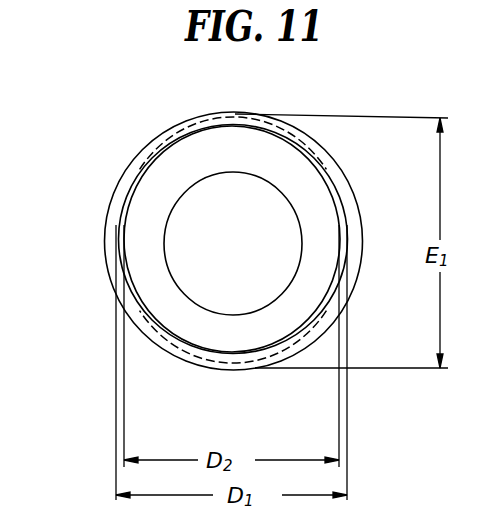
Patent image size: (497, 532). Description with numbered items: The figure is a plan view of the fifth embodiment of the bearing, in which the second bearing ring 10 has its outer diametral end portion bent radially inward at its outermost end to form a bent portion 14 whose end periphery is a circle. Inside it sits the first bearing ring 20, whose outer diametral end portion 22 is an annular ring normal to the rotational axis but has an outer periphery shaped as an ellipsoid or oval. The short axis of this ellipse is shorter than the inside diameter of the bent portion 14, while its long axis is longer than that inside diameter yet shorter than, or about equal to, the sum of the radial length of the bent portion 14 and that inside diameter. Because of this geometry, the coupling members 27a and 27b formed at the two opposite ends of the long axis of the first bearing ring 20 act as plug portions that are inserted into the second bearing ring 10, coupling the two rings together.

The second bearing ring 10 is at (338, 170).
The bent portion 14 is at (128, 192).
The outer diametral end portion 22 is at (122, 230).
The first bearing ring 20 is at (317, 245).
The coupling member 27a is at (233, 125).
The coupling member 27b is at (207, 368).